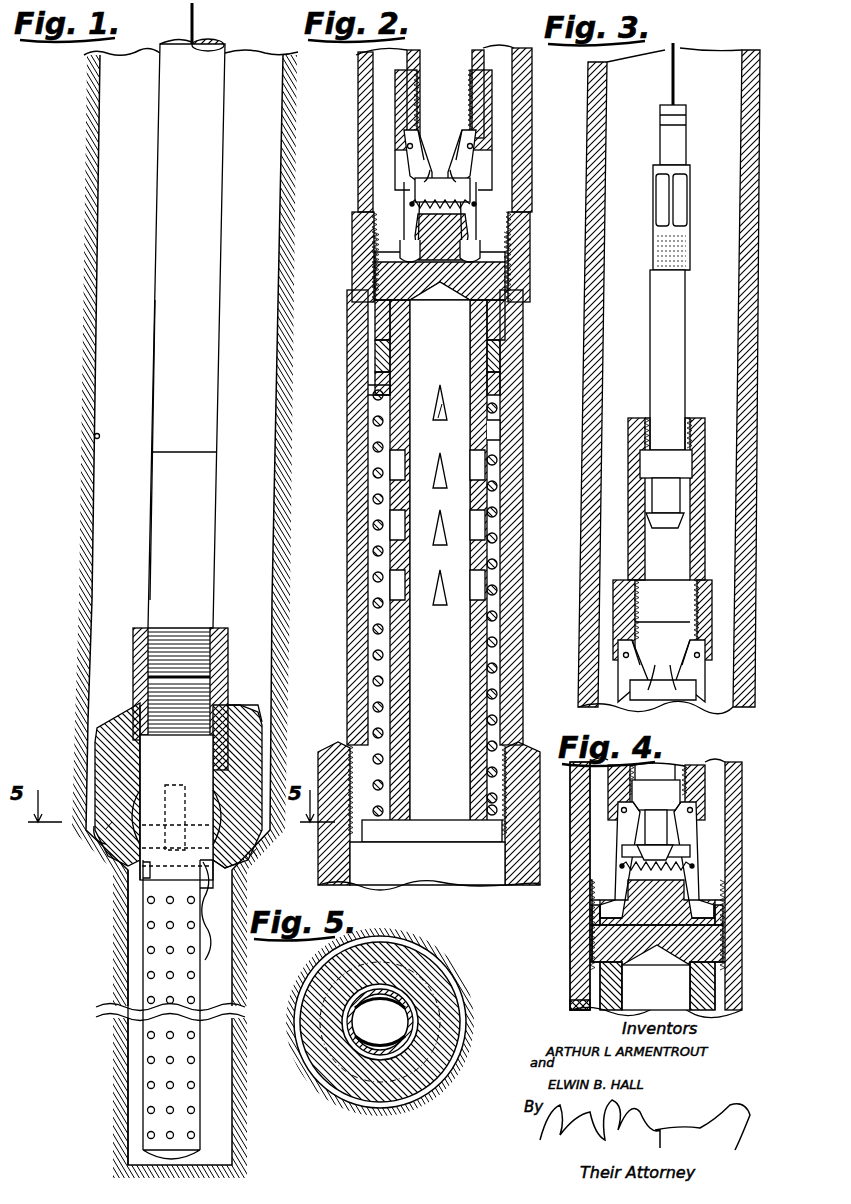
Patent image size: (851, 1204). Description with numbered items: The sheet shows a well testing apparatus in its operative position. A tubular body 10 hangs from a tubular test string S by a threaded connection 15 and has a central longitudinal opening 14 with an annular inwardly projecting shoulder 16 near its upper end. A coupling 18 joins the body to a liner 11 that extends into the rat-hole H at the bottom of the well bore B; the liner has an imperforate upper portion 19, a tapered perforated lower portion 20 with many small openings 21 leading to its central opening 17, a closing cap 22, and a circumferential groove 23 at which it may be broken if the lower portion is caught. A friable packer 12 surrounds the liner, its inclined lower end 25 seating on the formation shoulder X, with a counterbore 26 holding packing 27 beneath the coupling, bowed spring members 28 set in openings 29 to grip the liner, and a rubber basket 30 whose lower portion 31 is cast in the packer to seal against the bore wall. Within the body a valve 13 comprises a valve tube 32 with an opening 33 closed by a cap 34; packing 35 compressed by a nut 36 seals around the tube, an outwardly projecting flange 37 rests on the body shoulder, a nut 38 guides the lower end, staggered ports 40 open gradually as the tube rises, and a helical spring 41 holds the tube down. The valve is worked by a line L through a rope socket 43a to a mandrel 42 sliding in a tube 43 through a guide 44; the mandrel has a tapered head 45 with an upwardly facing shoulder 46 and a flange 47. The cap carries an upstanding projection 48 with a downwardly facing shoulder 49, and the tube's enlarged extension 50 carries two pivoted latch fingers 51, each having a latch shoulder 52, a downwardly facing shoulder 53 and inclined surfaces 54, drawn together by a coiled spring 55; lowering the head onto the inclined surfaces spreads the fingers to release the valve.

In FIG. 1, the tubular test string S is at (186, 336).
In FIG. 2, the tubular test string S is at (526, 96).
In FIG. 3, the tubular test string S is at (752, 80).
In FIG. 4, the tubular test string S is at (742, 787).
In FIG. 1, the line L is at (197, 25).
In FIG. 3, the line L is at (676, 78).
In FIG. 1, the well bore B is at (95, 436).
In FIG. 5, the well bore B is at (466, 986).
In FIG. 1, the rat-hole H is at (127, 956).
In FIG. 1, the shoulder of earth formation X is at (110, 840).
In FIG. 1, the tubular body 10 is at (154, 537).
In FIG. 2, the tubular body 10 is at (352, 384).
In FIG. 4, the tubular body 10 is at (570, 990).
In FIG. 1, the liner 11 is at (160, 910).
In FIG. 5, the liner 11 is at (380, 1022).
In FIG. 1, the packer 12 is at (110, 719).
In FIG. 5, the packer 12 is at (440, 985).
In FIG. 2, the valve 13 is at (382, 409).
In FIG. 4, the valve 13 is at (606, 940).
In FIG. 2, the central longitudinal opening 14 is at (370, 439).
In FIG. 2, the threaded connection 15 is at (360, 265).
In FIG. 4, the threaded connection 15 is at (730, 917).
In FIG. 2, the annular inwardly projecting shoulder 16 is at (505, 322).
In FIG. 4, the annular inwardly projecting shoulder 16 is at (592, 974).
In FIG. 1, the central longitudinal opening of liner 17 is at (214, 879).
In FIG. 5, the central longitudinal opening of liner 17 is at (372, 1049).
In FIG. 1, the coupling 18 is at (224, 661).
In FIG. 2, the coupling 18 is at (330, 745).
In FIG. 1, the imperforate upper portion 19 is at (176, 807).
In FIG. 5, the imperforate upper portion 19 is at (400, 1000).
In FIG. 1, the perforated lower portion 20 is at (155, 1046).
In FIG. 1, the openings 21 is at (205, 955).
In FIG. 1, the cap 22 is at (160, 1160).
In FIG. 1, the circumferential groove 23 is at (143, 880).
In FIG. 1, the lower end of packer 25 is at (240, 858).
In FIG. 1, the counterbore 26 is at (138, 708).
In FIG. 1, the packing 27 is at (150, 762).
In FIG. 1, the spring members 28 is at (210, 812).
In FIG. 1, the openings 29 is at (136, 806).
In FIG. 1, the basket 30 is at (254, 714).
In FIG. 5, the basket 30 is at (472, 998).
In FIG. 1, the lower portion of basket 31 is at (92, 833).
In FIG. 2, the valve tube 32 is at (392, 457).
In FIG. 4, the valve tube 32 is at (625, 1000).
In FIG. 2, the opening in tube 33 is at (440, 570).
In FIG. 4, the opening in tube 33 is at (656, 987).
In FIG. 2, the cap 34 is at (438, 296).
In FIG. 4, the cap 34 is at (700, 946).
In FIG. 2, the packing 35 is at (506, 356).
In FIG. 4, the packing 35 is at (585, 1008).
In FIG. 2, the nut 36 is at (503, 386).
In FIG. 2, the outwardly projecting flange 37 is at (512, 280).
In FIG. 4, the outwardly projecting flange 37 is at (598, 955).
In FIG. 2, the nut 38 is at (386, 824).
In FIG. 2, the ports 40 is at (452, 466).
In FIG. 2, the helical spring 41 is at (496, 432).
In FIG. 3, the mandrel 42 is at (678, 366).
In FIG. 4, the mandrel 42 is at (662, 772).
In FIG. 2, the tube 43 is at (485, 63).
In FIG. 3, the tube 43 is at (705, 439).
In FIG. 3, the rope socket 43a is at (680, 146).
In FIG. 3, the guide 44 is at (694, 418).
In FIG. 3, the tapered head 45 is at (665, 526).
In FIG. 3, the upwardly facing annular shoulder 46 is at (680, 509).
In FIG. 4, the upwardly facing annular shoulder 46 is at (656, 827).
In FIG. 3, the flange 47 is at (666, 464).
In FIG. 4, the flange 47 is at (656, 795).
In FIG. 2, the upstanding projection 48 is at (418, 222).
In FIG. 4, the upstanding projection 48 is at (622, 900).
In FIG. 2, the downwardly facing annular shoulder 49 is at (482, 259).
In FIG. 4, the downwardly facing annular shoulder 49 is at (600, 916).
In FIG. 2, the enlarged extension 50 is at (398, 120).
In FIG. 3, the enlarged extension 50 is at (712, 626).
In FIG. 4, the enlarged extension 50 is at (612, 783).
In FIG. 2, the latch fingers 51 is at (407, 193).
In FIG. 3, the latch fingers 51 is at (700, 695).
In FIG. 4, the latch fingers 51 is at (700, 876).
In FIG. 2, the latch shoulder 52 is at (406, 246).
In FIG. 4, the latch shoulder 52 is at (696, 900).
In FIG. 2, the downwardly facing shoulder 53 is at (456, 176).
In FIG. 3, the downwardly facing shoulder 53 is at (672, 678).
In FIG. 4, the downwardly facing shoulder 53 is at (680, 851).
In FIG. 2, the inclined surfaces 54 is at (476, 150).
In FIG. 3, the inclined surfaces 54 is at (690, 660).
In FIG. 4, the inclined surfaces 54 is at (693, 833).
In FIG. 2, the coiled spring 55 is at (474, 206).
In FIG. 4, the coiled spring 55 is at (693, 866).